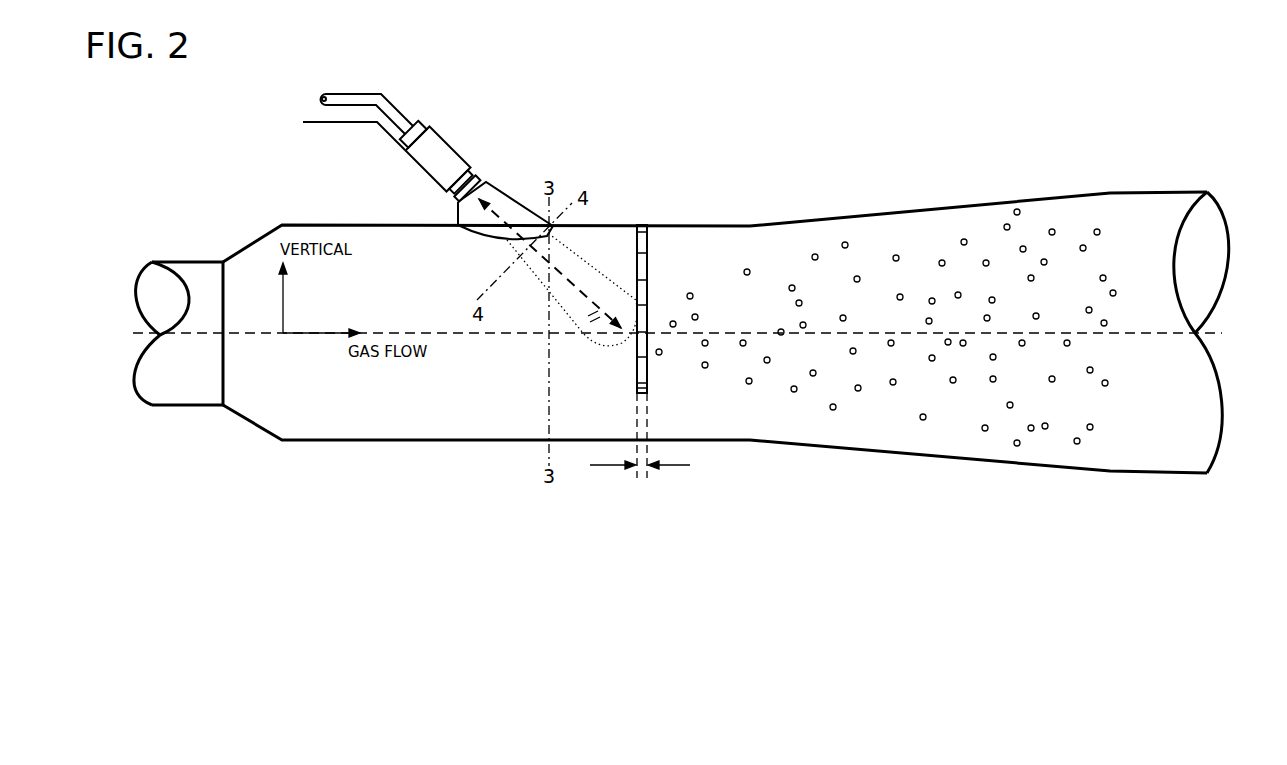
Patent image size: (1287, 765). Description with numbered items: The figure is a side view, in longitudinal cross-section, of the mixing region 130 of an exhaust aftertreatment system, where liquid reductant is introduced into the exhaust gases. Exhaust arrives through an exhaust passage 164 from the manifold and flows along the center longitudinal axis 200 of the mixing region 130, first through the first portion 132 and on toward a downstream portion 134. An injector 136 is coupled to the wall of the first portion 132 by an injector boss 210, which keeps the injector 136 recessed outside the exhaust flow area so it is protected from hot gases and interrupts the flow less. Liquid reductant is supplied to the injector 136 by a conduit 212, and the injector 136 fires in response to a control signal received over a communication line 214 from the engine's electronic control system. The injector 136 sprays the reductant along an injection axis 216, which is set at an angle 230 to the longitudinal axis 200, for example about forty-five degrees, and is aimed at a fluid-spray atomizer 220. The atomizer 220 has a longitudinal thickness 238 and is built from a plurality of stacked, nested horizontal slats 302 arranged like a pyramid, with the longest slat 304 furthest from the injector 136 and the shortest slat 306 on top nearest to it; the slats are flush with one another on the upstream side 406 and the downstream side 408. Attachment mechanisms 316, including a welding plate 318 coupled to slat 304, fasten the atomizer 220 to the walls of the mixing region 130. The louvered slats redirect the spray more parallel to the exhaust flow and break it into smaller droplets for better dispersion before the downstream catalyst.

The mixing region 130 is at (276, 499).
The first portion of mixing region 132 is at (458, 441).
The downstream exhaust pipe section 134 is at (910, 456).
The injector 136 is at (412, 157).
The exhaust passage 164 is at (168, 406).
The center longitudinal axis 200 is at (1214, 332).
The injector boss 210 is at (503, 213).
The conduit 212 is at (388, 112).
The communication line 214 is at (357, 124).
The injection axis 216 is at (553, 262).
The fluid-spray atomizer 220 is at (708, 240).
The angle 230 is at (570, 321).
The longitudinal width or thickness 238 is at (660, 435).
The horizontal slats 302 is at (688, 270).
The horizontal slat 304 is at (642, 372).
The horizontal slat 306 is at (647, 243).
The attachment mechanisms 316 is at (645, 214).
The welding plate 318 is at (633, 392).
The upstream side 406 is at (565, 362).
The downstream side 408 is at (730, 396).